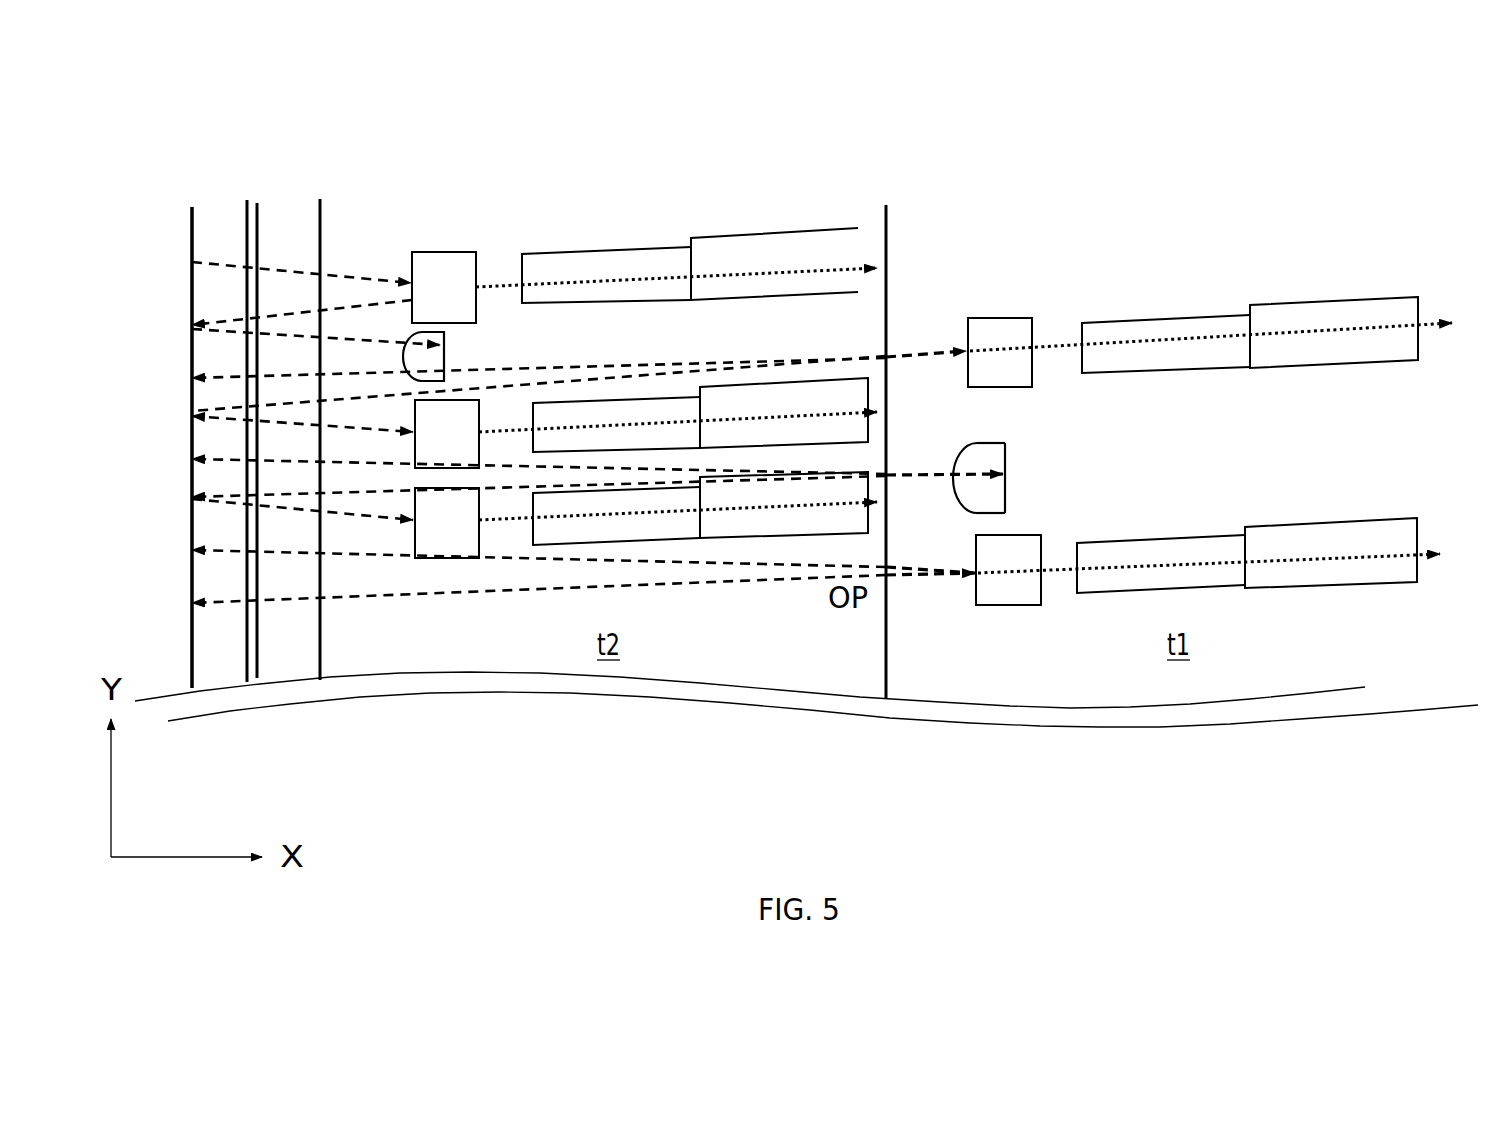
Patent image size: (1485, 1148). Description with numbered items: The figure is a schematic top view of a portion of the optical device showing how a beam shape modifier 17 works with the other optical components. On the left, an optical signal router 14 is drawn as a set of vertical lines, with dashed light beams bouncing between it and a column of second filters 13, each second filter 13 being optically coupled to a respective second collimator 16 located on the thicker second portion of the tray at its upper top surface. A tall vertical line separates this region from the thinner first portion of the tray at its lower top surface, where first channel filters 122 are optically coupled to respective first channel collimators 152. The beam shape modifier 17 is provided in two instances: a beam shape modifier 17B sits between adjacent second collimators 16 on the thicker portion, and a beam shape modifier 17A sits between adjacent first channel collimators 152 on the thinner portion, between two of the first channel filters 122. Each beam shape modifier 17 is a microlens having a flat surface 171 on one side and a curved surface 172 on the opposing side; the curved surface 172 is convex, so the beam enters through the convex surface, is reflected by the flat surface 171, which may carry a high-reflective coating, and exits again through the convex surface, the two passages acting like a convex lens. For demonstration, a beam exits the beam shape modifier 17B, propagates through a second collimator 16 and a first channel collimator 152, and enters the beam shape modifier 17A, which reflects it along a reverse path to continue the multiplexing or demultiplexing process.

The optical signal router 14 is at (205, 229).
The second filter 13 is at (448, 396).
The second collimator 16 is at (743, 233).
The beam shape modifier 17 is at (1275, 85).
The beam shape modifier 17A is at (1011, 450).
The beam shape modifier 17B is at (427, 333).
The flat surface 171 is at (1005, 496).
The curved surface 172 is at (956, 459).
The first channel filter 122 is at (985, 316).
The first channel collimator 152 is at (1289, 379).